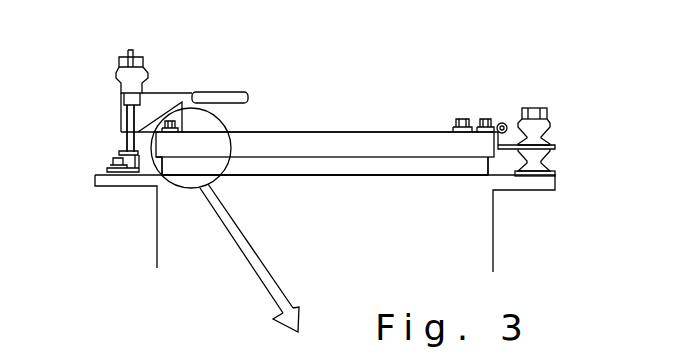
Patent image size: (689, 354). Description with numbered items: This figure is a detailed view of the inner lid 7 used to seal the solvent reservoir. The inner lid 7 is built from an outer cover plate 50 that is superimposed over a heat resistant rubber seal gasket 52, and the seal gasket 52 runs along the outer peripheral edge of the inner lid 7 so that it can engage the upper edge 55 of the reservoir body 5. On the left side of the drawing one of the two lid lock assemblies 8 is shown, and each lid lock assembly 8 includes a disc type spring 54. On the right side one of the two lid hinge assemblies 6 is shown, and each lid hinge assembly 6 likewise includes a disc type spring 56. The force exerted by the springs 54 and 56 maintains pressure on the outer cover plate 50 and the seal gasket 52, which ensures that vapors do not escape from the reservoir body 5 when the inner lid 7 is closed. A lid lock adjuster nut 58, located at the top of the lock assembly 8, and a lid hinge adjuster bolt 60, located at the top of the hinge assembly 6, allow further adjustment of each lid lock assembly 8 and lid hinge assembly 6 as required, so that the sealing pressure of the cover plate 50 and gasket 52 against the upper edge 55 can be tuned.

The reservoir body 5 is at (478, 221).
The lid hinge assembly 6 is at (587, 158).
The inner lid 7 is at (322, 116).
The lid lock assembly 8 is at (104, 120).
The outer cover plate 50 is at (413, 142).
The seal gasket 52 is at (383, 168).
The disc type spring 54 is at (118, 80).
The upper edge 55 is at (263, 175).
The disc type spring 56 is at (548, 123).
The lid lock adjuster nut 58 is at (138, 53).
The lid hinge adjuster bolt 60 is at (530, 108).